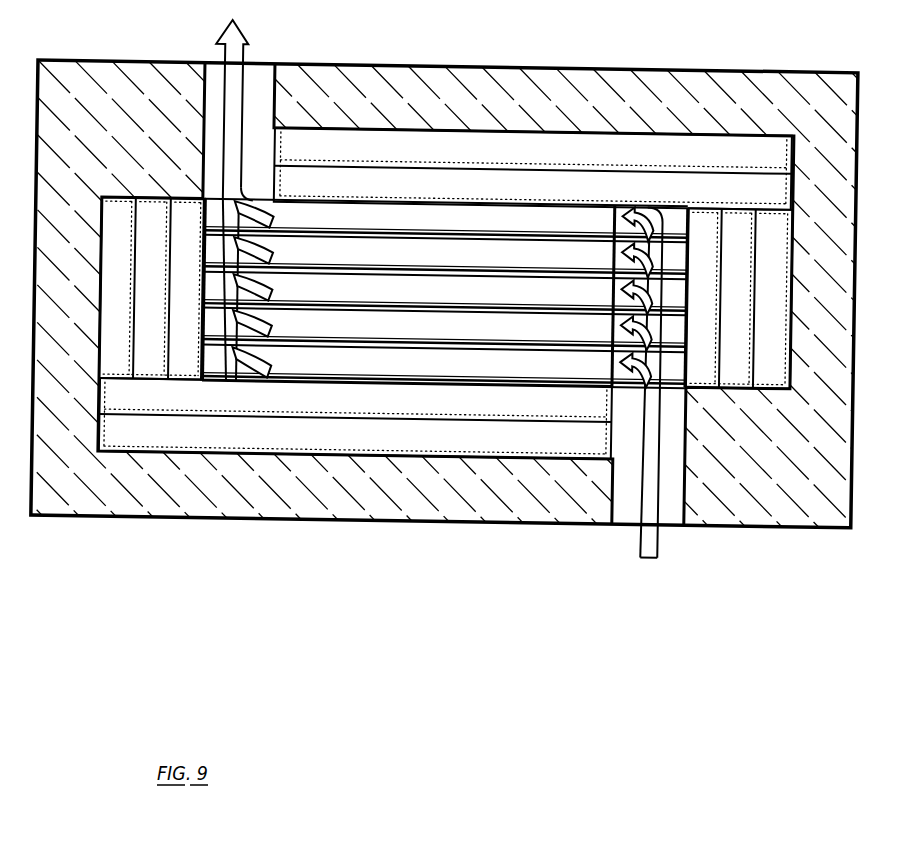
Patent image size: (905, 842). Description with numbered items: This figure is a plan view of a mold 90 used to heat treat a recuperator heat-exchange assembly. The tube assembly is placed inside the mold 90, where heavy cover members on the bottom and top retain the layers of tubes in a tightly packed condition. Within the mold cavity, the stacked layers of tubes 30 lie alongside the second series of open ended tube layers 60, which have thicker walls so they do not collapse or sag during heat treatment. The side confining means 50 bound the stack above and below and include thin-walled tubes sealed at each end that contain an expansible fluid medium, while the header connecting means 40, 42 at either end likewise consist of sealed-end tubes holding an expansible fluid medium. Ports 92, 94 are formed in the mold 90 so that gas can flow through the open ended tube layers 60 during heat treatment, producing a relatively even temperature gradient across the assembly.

The stacked layers of tubes 30 is at (446, 207).
The header connecting means 40 is at (114, 296).
The header connecting means 42 is at (709, 154).
The side confining means 50 is at (403, 79).
The layers of open ended tubes 60 is at (490, 158).
The mold 90 is at (299, 455).
The port 92 is at (651, 443).
The port 94 is at (228, 4).